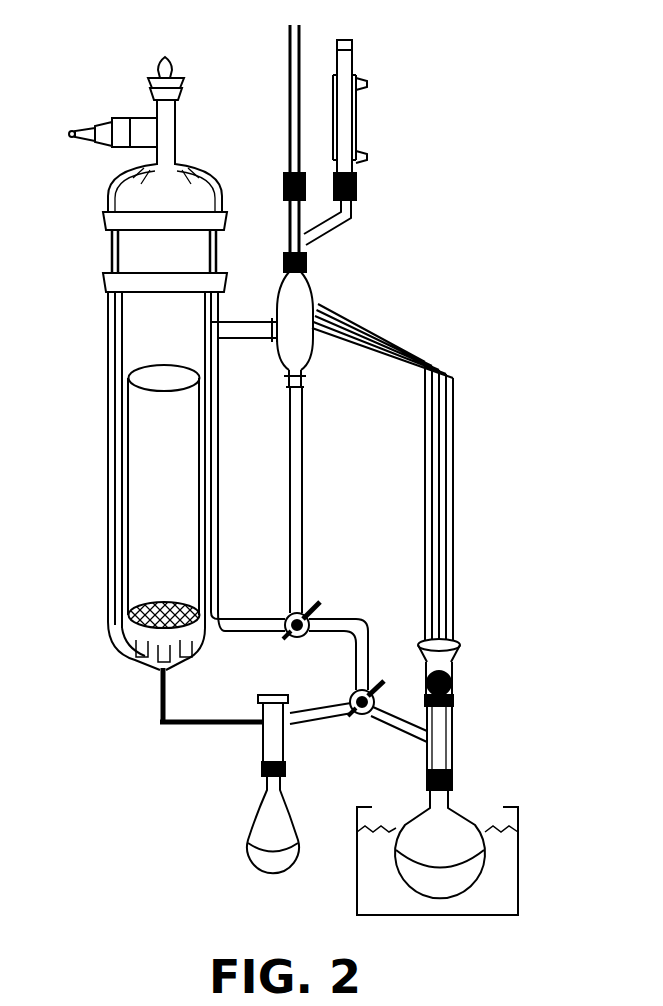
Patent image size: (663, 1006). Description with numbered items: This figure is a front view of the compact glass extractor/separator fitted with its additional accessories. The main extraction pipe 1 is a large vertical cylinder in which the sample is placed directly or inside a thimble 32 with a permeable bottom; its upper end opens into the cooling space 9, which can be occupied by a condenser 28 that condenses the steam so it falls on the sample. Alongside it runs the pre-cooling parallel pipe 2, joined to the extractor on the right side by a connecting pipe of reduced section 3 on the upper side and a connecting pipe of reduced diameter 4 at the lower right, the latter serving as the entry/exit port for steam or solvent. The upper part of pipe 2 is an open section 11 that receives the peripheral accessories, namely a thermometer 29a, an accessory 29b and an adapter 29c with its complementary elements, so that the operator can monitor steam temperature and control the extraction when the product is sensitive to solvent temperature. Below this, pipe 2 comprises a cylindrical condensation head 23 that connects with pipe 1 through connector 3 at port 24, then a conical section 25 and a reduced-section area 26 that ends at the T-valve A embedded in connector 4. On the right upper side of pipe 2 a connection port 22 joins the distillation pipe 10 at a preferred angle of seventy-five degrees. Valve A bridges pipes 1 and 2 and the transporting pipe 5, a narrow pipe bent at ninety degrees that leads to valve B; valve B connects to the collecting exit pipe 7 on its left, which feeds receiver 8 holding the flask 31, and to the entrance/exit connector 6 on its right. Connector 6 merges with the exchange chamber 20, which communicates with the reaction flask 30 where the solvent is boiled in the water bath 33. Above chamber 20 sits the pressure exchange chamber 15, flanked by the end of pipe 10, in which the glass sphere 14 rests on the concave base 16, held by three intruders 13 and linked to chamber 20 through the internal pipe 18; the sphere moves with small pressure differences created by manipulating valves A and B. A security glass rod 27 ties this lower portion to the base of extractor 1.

The extraction pipe 1 is at (108, 404).
The pre-cooling parallel pipe 2 is at (303, 470).
The connecting pipe of reduced section 3 is at (247, 320).
The connecting pipe of reduced diameter 4 is at (245, 620).
The transporting pipe 5 is at (360, 618).
The entrance/exit connector 6 is at (392, 700).
The collecting exit pipe 7 is at (330, 723).
The receiver 8 is at (260, 738).
The cooling space 9 is at (108, 262).
The distillation pipe 10 is at (455, 430).
The open section 11 is at (307, 263).
The intruders 13 is at (462, 650).
The glass sphere 14 is at (452, 683).
The pressure exchange chamber 15 is at (455, 672).
The concave base 16 is at (452, 707).
The internal pipe 18 is at (427, 757).
The exchange chamber 20 is at (453, 775).
The connection port 22 is at (322, 307).
The cylindrical condensation head 23 is at (312, 352).
The port 24 is at (292, 341).
The conical section 25 is at (303, 392).
The reduced-section area 26 is at (303, 520).
The security glass rod 27 is at (160, 718).
The condenser 28 is at (157, 106).
The thermometer 29a is at (289, 26).
The peripheral accessory 29b is at (358, 123).
The adapter 29c is at (352, 214).
The reaction flask 30 is at (518, 872).
The flask 31 is at (255, 815).
The thimble 32 is at (110, 514).
The water bath 33 is at (357, 885).